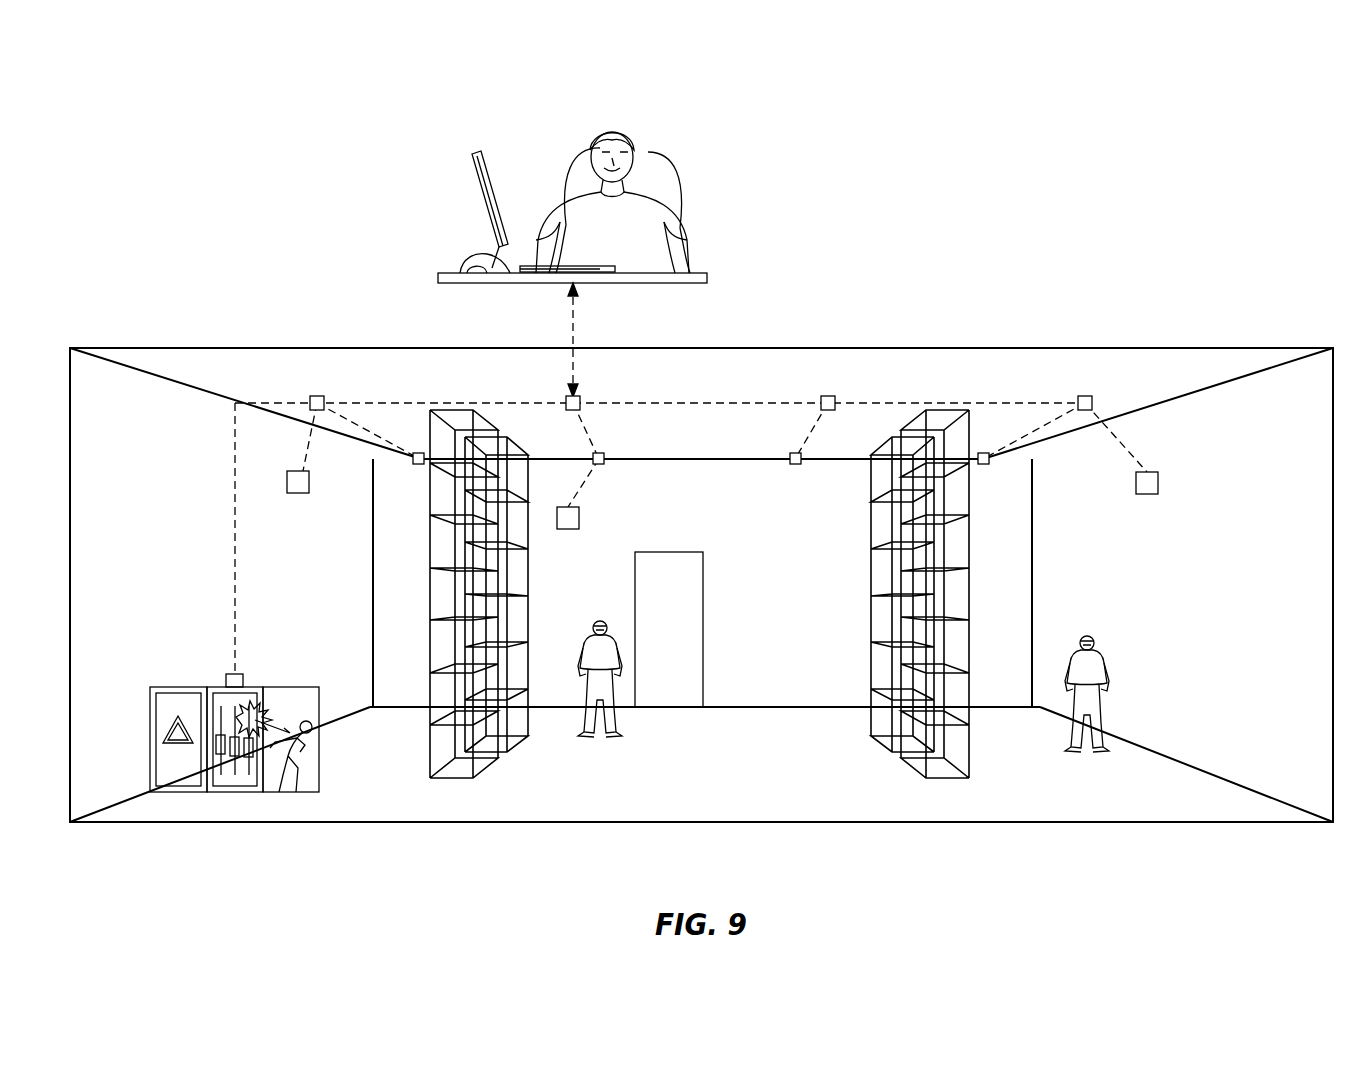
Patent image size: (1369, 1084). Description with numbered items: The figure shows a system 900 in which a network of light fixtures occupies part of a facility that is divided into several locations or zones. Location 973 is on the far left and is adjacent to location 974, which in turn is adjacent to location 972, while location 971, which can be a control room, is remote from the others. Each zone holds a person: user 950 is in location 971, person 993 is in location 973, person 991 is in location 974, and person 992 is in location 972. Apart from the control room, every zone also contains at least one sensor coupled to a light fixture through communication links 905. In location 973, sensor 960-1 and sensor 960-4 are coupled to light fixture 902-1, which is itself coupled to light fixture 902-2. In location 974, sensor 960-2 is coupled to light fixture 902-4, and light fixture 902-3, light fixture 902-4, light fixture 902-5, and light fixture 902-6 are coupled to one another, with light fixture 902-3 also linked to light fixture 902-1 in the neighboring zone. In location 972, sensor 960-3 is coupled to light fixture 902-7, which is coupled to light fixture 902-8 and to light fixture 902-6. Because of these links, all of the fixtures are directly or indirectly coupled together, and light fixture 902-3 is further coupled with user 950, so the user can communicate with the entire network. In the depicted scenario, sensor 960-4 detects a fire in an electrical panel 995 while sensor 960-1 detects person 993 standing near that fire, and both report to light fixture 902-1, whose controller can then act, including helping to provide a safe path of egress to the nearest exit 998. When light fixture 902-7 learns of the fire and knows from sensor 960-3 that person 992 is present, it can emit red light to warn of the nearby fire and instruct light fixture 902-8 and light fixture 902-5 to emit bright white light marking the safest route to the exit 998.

The system 900 is at (1117, 104).
The location 971 is at (550, 139).
The user 950 is at (620, 125).
The communication links 905 is at (575, 332).
The light fixture 902-1 is at (317, 395).
The light fixture 902-2 is at (418, 465).
The light fixture 902-3 is at (572, 395).
The light fixture 902-4 is at (606, 459).
The light fixture 902-5 is at (795, 466).
The light fixture 902-6 is at (828, 395).
The light fixture 902-7 is at (1085, 395).
The light fixture 902-8 is at (983, 465).
The sensor 960-1 is at (287, 482).
The sensor 960-2 is at (580, 518).
The sensor 960-3 is at (1158, 483).
The sensor 960-4 is at (233, 674).
The electrical panel 995 is at (222, 780).
The person 993 is at (300, 792).
The exit 998 is at (703, 632).
The person 991 is at (612, 713).
The person 992 is at (1096, 656).
The location 972 is at (1247, 696).
The location 973 is at (152, 449).
The location 974 is at (807, 679).